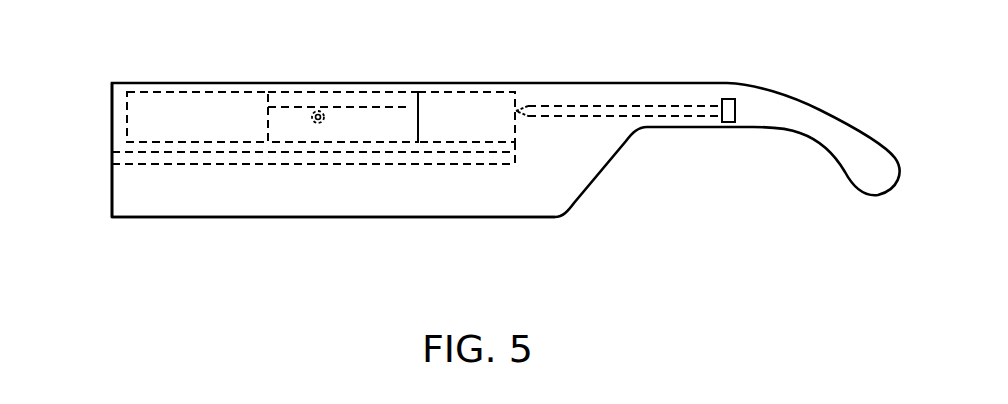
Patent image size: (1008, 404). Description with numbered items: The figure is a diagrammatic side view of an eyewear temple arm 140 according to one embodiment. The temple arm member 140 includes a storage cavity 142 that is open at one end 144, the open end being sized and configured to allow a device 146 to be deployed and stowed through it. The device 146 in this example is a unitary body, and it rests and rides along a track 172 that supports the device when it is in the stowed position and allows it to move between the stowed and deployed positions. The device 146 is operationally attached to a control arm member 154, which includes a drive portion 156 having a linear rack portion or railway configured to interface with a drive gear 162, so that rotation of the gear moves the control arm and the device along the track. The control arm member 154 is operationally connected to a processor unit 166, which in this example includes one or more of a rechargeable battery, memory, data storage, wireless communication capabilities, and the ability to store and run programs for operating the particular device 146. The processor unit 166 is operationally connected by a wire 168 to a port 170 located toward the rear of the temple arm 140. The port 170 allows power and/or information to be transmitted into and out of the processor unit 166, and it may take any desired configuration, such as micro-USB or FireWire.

The temple arm 140 is at (433, 83).
The storage cavity 142 is at (503, 202).
The open end 144 is at (112, 113).
The device 146 is at (198, 92).
The control arm member 154 is at (310, 92).
The drive portion 156 is at (372, 107).
The drive gear 162 is at (324, 121).
The processor unit 166 is at (485, 92).
The wire 168 is at (615, 105).
The port 170 is at (724, 98).
The track 172 is at (208, 165).